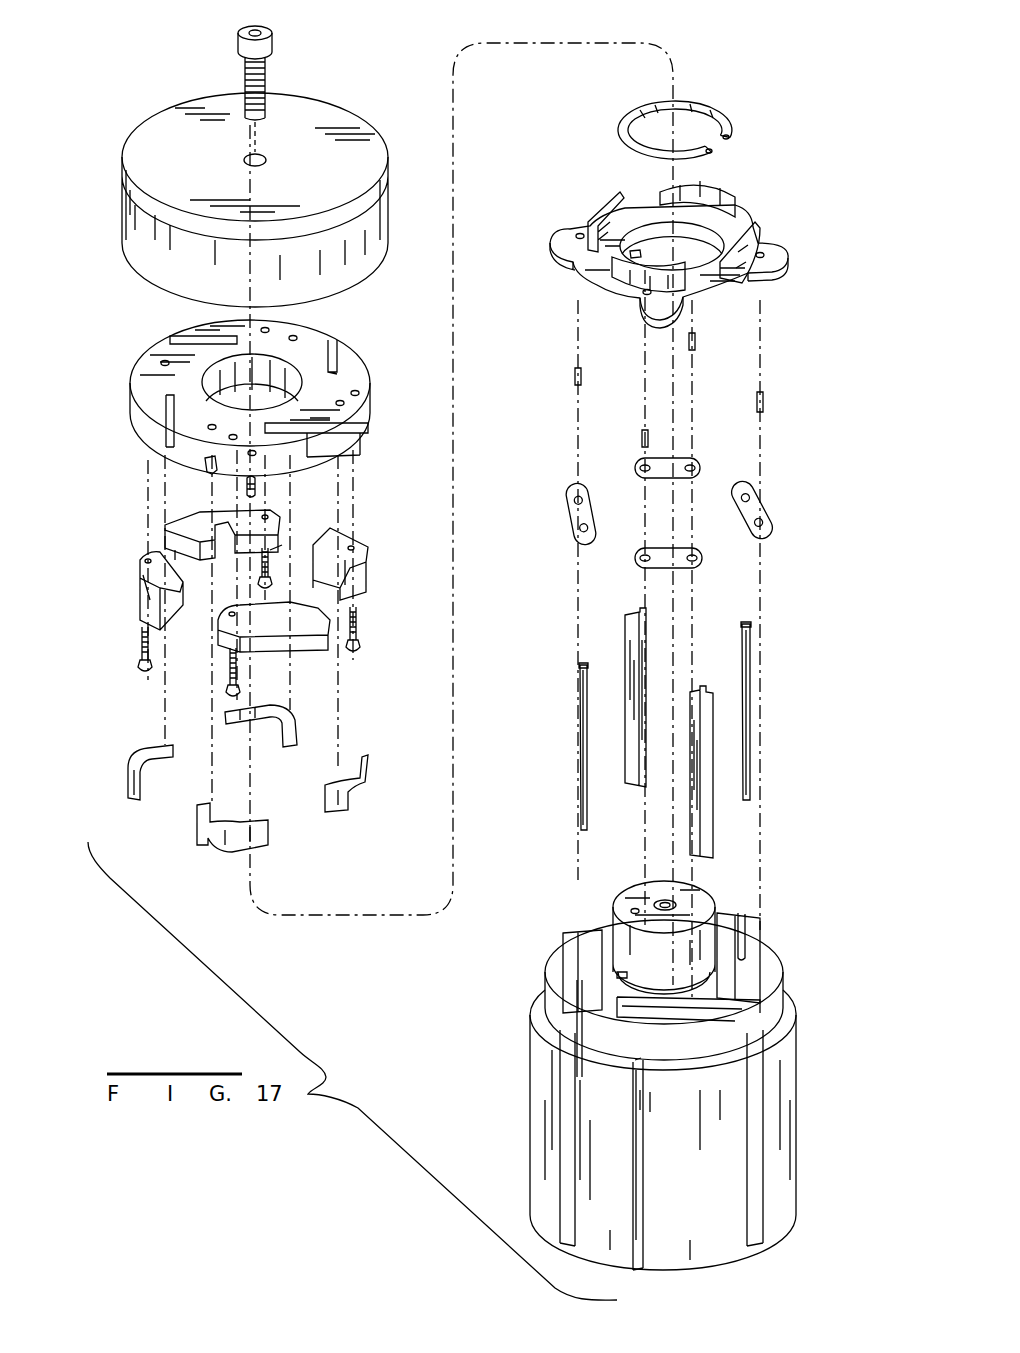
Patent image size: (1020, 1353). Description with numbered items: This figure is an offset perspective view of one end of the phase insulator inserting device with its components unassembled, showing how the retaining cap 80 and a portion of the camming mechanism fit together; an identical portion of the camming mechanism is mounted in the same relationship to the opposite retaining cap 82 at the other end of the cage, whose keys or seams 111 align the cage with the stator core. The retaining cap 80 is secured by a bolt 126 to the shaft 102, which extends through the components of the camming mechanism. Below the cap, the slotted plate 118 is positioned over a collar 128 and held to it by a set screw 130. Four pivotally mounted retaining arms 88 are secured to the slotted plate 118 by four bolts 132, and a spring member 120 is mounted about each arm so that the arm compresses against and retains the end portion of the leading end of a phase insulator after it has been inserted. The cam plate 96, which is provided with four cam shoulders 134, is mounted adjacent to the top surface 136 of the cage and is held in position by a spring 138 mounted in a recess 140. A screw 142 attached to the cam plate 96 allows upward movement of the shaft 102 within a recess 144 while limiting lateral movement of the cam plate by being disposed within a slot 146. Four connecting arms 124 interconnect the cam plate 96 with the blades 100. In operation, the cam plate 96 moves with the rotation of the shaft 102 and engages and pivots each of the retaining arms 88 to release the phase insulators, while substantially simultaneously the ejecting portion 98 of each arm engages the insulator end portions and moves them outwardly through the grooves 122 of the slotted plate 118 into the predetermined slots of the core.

The retaining cap member 80 is at (340, 130).
The retaining cap member 82 is at (532, 1102).
The retaining arm 88 is at (192, 517).
The cam plate 96 is at (763, 245).
The ejecting portion 98 is at (108, 613).
The blade 100 is at (627, 633).
The shaft 102 is at (678, 897).
The key or seam 111 is at (638, 1117).
The slotted plate 118 is at (363, 362).
The spring member 120 is at (128, 762).
The groove 122 is at (200, 340).
The connecting arm 124 is at (566, 512).
The bolt 126 is at (274, 52).
The collar 128 is at (713, 915).
The set screw 130 is at (257, 485).
The bolt 132 is at (145, 643).
The cam shoulder 134 is at (618, 196).
The top surface 136 is at (563, 940).
The spring 138 is at (712, 110).
The recess 140 is at (762, 955).
The screw 142 is at (640, 233).
The recess 144 is at (635, 908).
The slot 146 is at (620, 975).